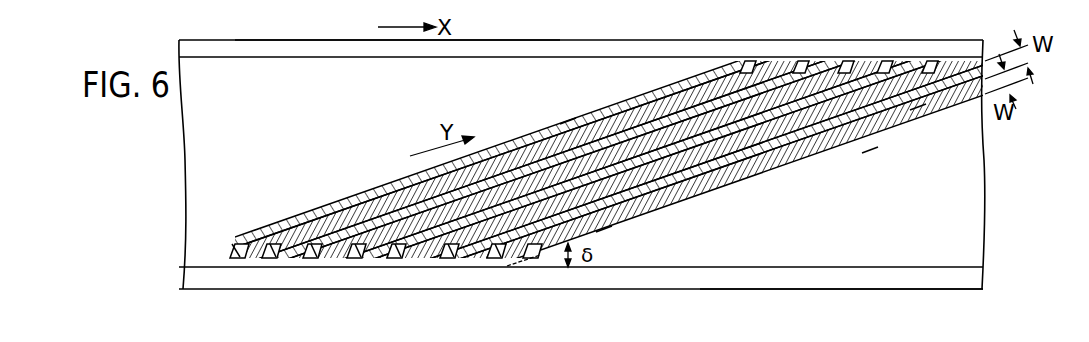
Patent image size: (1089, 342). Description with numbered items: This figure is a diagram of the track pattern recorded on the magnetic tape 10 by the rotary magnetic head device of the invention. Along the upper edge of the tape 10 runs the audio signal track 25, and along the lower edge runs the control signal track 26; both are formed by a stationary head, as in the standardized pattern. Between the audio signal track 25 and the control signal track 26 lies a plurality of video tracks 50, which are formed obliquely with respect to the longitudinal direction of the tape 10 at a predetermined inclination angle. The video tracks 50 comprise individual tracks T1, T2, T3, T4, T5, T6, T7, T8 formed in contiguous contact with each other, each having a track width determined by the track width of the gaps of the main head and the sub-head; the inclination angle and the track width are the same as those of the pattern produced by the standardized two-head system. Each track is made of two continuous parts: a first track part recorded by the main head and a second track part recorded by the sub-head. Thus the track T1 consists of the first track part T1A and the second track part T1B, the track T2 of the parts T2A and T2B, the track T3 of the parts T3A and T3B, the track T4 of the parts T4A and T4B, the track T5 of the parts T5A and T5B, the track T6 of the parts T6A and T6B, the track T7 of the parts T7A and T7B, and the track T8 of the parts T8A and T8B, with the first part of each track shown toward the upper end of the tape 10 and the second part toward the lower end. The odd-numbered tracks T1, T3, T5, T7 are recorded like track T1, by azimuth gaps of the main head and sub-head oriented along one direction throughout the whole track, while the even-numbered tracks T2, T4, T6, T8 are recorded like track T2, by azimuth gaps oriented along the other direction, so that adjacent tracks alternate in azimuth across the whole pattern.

The tape 10 is at (184, 187).
The audio signal track 25 is at (573, 42).
The control signal track 26 is at (887, 289).
The video tracks 50 is at (509, 127).
The track T1 is at (528, 246).
The track T2 is at (455, 244).
The track T3 is at (432, 256).
The track T4 is at (390, 256).
The track T5 is at (346, 257).
The track T6 is at (304, 258).
The track T7 is at (264, 258).
The track T8 is at (229, 258).
The first track part T1A is at (869, 150).
The first track part T2A is at (918, 107).
The first track part T3A is at (935, 69).
The first track part T4A is at (890, 69).
The first track part T5A is at (851, 69).
The first track part T6A is at (805, 68).
The first track part T7A is at (753, 61).
The first track part T8A is at (567, 122).
The second track part T1B is at (604, 230).
The second track part T2B is at (500, 256).
The second track part T3B is at (450, 256).
The second track part T4B is at (410, 253).
The second track part T5B is at (363, 254).
The second track part T6B is at (324, 252).
The second track part T7B is at (273, 255).
The second track part T8B is at (247, 237).